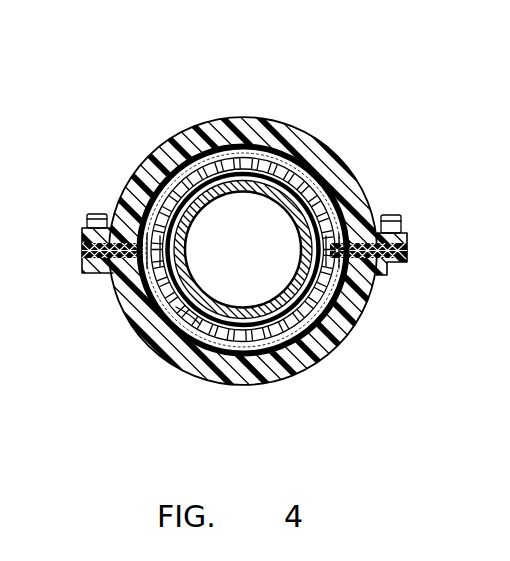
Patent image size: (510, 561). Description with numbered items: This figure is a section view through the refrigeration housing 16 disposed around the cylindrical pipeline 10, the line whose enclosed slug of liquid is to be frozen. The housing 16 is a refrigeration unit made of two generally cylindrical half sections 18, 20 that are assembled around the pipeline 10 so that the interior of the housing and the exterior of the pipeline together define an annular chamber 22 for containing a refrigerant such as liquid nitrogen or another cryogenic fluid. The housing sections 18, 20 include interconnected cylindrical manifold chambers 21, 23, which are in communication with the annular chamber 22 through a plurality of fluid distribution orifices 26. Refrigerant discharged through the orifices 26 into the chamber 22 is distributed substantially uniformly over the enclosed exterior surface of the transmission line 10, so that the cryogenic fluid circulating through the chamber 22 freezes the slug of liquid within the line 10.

The line 10 is at (299, 187).
The housing 16 is at (289, 107).
The half section 18 is at (370, 197).
The half section 20 is at (325, 357).
The manifold chamber 21 is at (363, 200).
The interior chamber 22 is at (171, 172).
The manifold chamber 23 is at (245, 345).
The fluid distribution orifices 26 is at (112, 221).